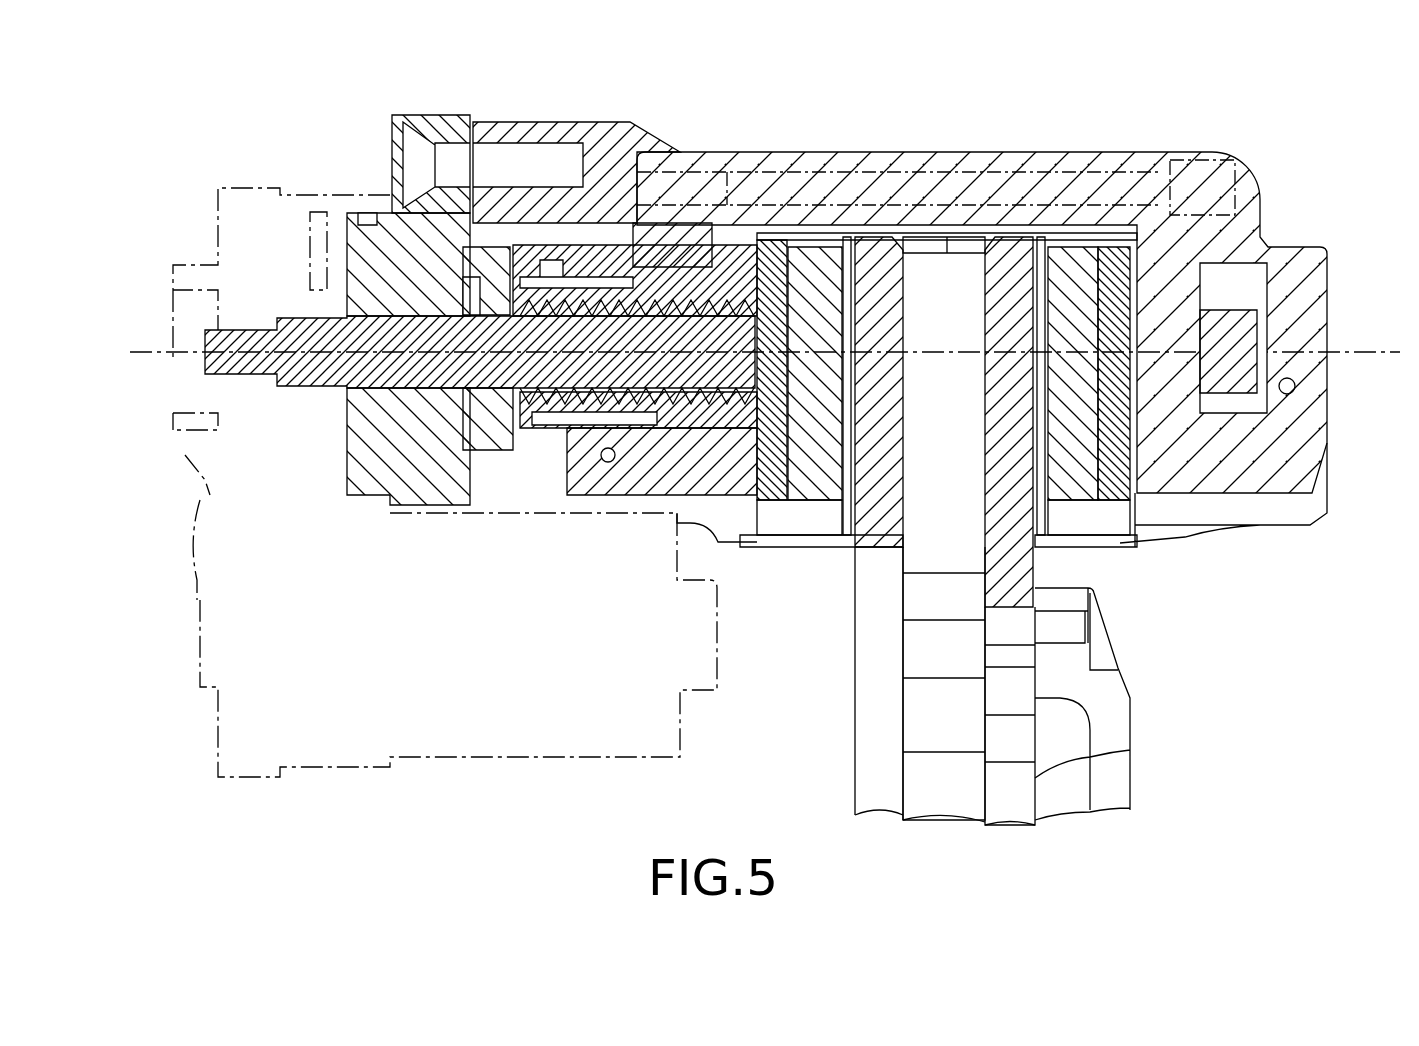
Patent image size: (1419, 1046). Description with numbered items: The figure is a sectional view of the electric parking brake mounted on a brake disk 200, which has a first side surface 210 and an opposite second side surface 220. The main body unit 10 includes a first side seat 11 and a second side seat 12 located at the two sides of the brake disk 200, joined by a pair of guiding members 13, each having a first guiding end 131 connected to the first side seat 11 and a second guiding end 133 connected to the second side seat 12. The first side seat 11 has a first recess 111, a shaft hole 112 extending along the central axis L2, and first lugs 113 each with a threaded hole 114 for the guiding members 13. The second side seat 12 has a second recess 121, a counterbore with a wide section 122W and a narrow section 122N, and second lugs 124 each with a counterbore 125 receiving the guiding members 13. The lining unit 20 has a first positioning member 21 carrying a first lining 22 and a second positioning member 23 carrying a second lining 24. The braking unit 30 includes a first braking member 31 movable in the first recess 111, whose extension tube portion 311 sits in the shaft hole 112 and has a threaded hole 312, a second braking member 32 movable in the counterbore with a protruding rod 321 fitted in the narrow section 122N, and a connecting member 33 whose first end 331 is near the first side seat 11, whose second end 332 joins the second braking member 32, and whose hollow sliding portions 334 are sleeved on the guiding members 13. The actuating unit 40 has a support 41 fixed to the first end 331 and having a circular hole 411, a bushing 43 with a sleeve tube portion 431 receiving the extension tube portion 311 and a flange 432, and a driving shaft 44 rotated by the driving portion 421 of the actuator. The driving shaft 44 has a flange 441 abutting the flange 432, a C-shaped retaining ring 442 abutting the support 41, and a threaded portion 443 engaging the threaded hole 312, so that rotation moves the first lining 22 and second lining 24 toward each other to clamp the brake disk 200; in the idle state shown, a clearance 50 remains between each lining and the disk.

The main body unit 10 is at (1306, 262).
The first side seat 11 is at (660, 490).
The second side seat 12 is at (1318, 292).
The guiding members 13 is at (906, 190).
The lining unit 20 is at (832, 245).
The first positioning member 21 is at (772, 265).
The first lining 22 is at (808, 265).
The second positioning member 23 is at (1108, 275).
The second lining 24 is at (1062, 262).
The braking unit 30 is at (498, 112).
The first braking member 31 is at (775, 430).
The second braking member 32 is at (1280, 445).
The connecting member 33 is at (630, 200).
The actuating unit 40 is at (245, 712).
The support 41 is at (412, 118).
The bushing 43 is at (487, 460).
The driving shaft 44 is at (380, 330).
The clearance 50 is at (849, 530).
The first recess 111 is at (790, 265).
The shaft hole 112 is at (668, 222).
The first lugs 113 is at (700, 168).
The threaded hole 114 is at (720, 180).
The second recess 121 is at (1068, 250).
The narrow section 122N is at (1282, 398).
The wide section 122W is at (1182, 440).
The second lugs 124 is at (1146, 240).
The counterbore 125 is at (1176, 232).
The first guiding end 131 is at (640, 190).
The second guiding end 133 is at (1212, 147).
The brake disk 200 is at (882, 790).
The first side surface 210 is at (855, 758).
The second side surface 220 is at (1035, 776).
The extension tube portion 311 is at (650, 490).
The threaded hole 312 is at (545, 410).
The protruding rod 321 is at (1240, 345).
The first end 331 is at (488, 124).
The second end 332 is at (1238, 200).
The hollow sliding portions 334 is at (1030, 265).
The circular hole 411 is at (360, 410).
The driving portion 421 is at (240, 325).
The sleeve tube portion 431 is at (575, 420).
The flange 432 is at (420, 470).
The flange 441 is at (520, 270).
The C-shaped retaining ring 442 is at (358, 240).
The threaded portion 443 is at (742, 442).
The central axis L2 is at (765, 352).